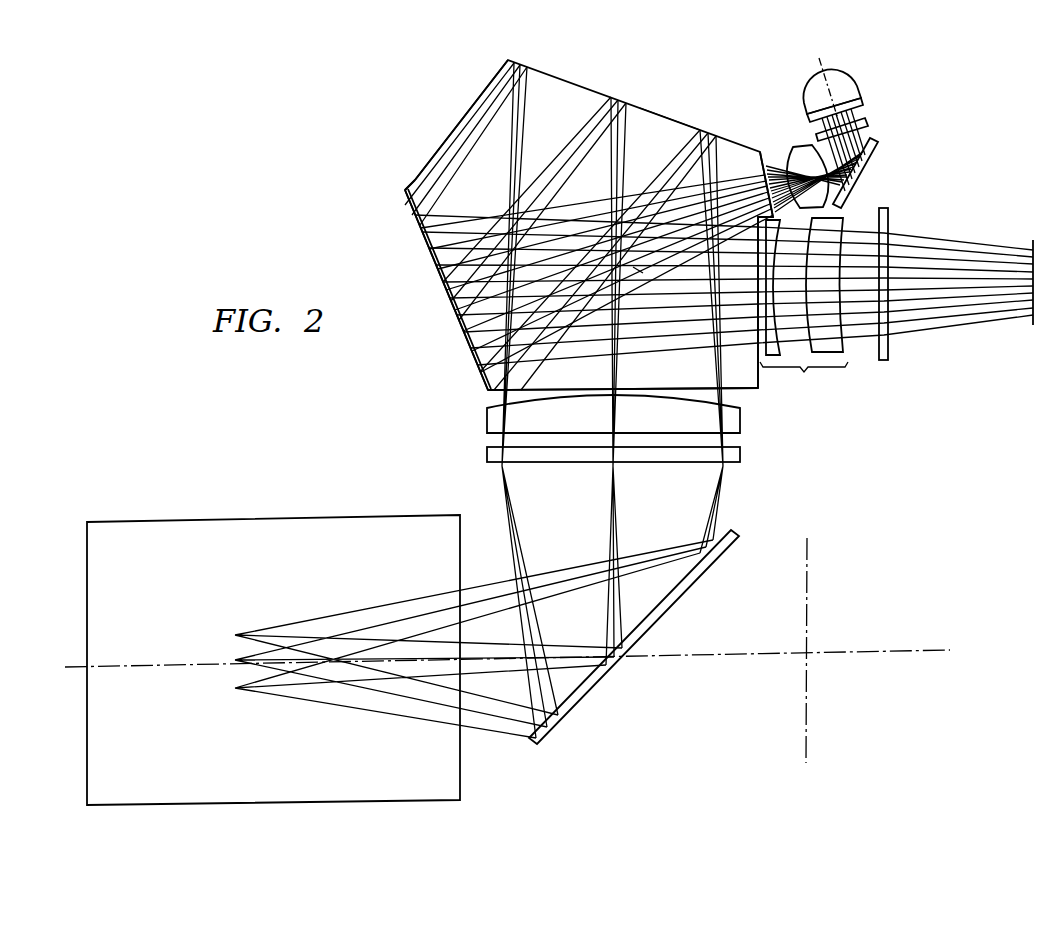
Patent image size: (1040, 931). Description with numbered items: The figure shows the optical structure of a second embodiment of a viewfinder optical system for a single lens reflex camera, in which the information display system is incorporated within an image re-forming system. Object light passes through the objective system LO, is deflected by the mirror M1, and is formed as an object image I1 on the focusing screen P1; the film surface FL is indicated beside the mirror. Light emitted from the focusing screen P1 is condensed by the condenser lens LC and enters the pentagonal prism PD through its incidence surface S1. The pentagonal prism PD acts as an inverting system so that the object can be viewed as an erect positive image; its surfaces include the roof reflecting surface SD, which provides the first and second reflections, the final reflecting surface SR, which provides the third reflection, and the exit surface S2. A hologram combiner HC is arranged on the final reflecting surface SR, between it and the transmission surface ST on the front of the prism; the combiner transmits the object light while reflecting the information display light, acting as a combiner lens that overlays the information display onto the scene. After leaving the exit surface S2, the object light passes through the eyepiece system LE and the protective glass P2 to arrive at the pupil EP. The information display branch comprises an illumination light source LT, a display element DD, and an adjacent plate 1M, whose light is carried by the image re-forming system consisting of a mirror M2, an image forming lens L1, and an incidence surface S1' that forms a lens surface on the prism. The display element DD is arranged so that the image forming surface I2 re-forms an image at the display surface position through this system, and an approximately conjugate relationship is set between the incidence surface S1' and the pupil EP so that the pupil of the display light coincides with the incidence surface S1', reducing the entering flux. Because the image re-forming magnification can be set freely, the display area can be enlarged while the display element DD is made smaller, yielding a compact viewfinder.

The pentagonal prism PD is at (583, 87).
The roof reflecting surface SD is at (663, 108).
The transmission surface ST is at (413, 177).
The hologram combiner HC is at (409, 188).
The final reflecting surface SR is at (405, 200).
The incidence surface S1' is at (759, 164).
The exit surface S2 is at (759, 386).
The incidence surface S1 is at (629, 410).
The image forming surface I2 is at (630, 167).
The image forming lens L1 is at (800, 148).
The illumination light source LT is at (850, 77).
The display element DD is at (868, 100).
The plate 1M is at (868, 122).
The mirror M2 is at (877, 143).
The eyepiece system LE is at (804, 307).
The protective glass P2 is at (884, 362).
The pupil EP is at (1030, 241).
The condenser lens LC is at (487, 422).
The focusing screen P1 is at (742, 452).
The image I1 is at (493, 465).
The mirror M1 is at (737, 530).
The objective system LO is at (283, 515).
The film surface FL is at (808, 553).